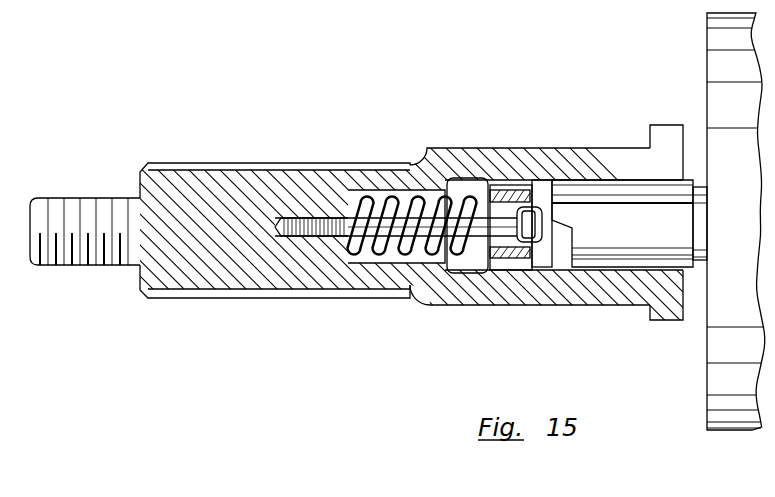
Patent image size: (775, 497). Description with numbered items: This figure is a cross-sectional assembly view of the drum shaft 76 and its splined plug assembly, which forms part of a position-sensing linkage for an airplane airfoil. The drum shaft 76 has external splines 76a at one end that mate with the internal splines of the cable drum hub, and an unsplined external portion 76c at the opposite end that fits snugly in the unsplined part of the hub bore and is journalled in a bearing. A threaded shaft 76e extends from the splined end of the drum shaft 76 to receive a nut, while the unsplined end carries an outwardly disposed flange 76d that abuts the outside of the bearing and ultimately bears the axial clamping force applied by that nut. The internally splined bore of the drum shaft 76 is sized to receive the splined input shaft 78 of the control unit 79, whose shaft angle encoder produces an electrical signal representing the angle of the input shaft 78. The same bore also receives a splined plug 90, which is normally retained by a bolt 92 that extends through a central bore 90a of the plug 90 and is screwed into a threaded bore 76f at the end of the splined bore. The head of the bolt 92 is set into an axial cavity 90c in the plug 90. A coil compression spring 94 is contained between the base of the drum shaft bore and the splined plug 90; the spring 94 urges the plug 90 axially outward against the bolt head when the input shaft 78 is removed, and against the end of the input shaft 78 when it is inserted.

The drum shaft 76 is at (433, 306).
The external splines 76a is at (172, 161).
The unsplined external portion 76c is at (620, 306).
The flange 76d is at (668, 125).
The threaded shaft 76e is at (70, 197).
The threaded bore 76f is at (306, 215).
The input shaft 78 is at (608, 207).
The control unit 79 is at (715, 382).
The splined plug 90 is at (505, 190).
The central bore 90a is at (500, 258).
The axial cavity 90c is at (530, 262).
The bolt 92 is at (445, 205).
The coil compression spring 94 is at (392, 203).